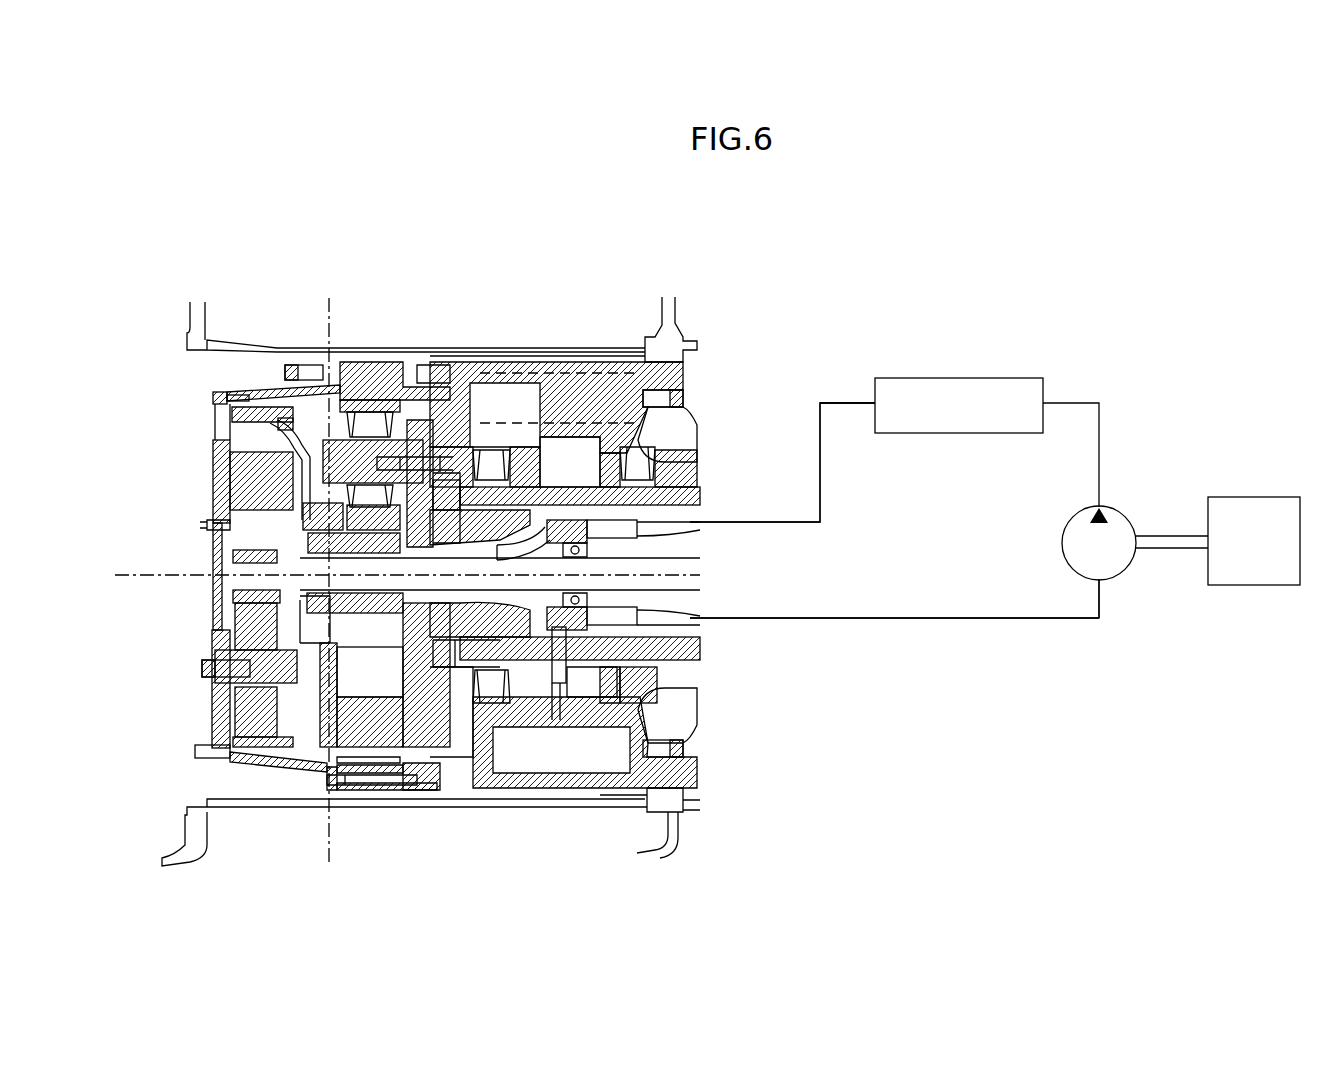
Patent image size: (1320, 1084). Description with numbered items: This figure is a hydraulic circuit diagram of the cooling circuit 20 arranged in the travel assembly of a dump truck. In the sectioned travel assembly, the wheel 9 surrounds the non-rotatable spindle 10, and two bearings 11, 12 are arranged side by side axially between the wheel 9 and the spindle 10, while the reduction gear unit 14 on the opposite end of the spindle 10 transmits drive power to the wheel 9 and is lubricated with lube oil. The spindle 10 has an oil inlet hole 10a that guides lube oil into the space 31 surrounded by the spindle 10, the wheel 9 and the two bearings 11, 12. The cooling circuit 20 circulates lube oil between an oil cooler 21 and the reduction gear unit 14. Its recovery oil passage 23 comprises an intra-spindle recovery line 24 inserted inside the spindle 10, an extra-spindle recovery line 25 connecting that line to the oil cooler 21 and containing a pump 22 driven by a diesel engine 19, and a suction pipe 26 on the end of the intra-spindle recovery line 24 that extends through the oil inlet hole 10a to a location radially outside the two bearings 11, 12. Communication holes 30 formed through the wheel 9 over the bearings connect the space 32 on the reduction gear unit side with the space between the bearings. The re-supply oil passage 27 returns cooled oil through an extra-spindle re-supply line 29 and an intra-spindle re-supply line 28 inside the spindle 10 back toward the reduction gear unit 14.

The wheel 9 is at (570, 362).
The spindle 10 is at (545, 487).
The oil inlet hole 10a is at (549, 705).
The bearing 11 is at (502, 713).
The bearing 12 is at (633, 760).
The reduction gear unit 14 is at (212, 410).
The diesel engine 19 is at (1262, 585).
The cooling circuit 20 is at (1090, 340).
The oil cooler 21 is at (985, 378).
The pump 22 is at (1127, 566).
The recovery oil passage 23 is at (931, 627).
The intra-spindle recovery line 24 is at (690, 612).
The extra-spindle recovery line 25 is at (865, 618).
The suction pipe 26 is at (563, 713).
The re-supply oil passage 27 is at (836, 402).
The intra-spindle re-supply line 28 is at (690, 530).
The extra-spindle re-supply line 29 is at (760, 522).
The communication holes 30 is at (493, 737).
The space 31 is at (597, 695).
The space 32 is at (470, 742).